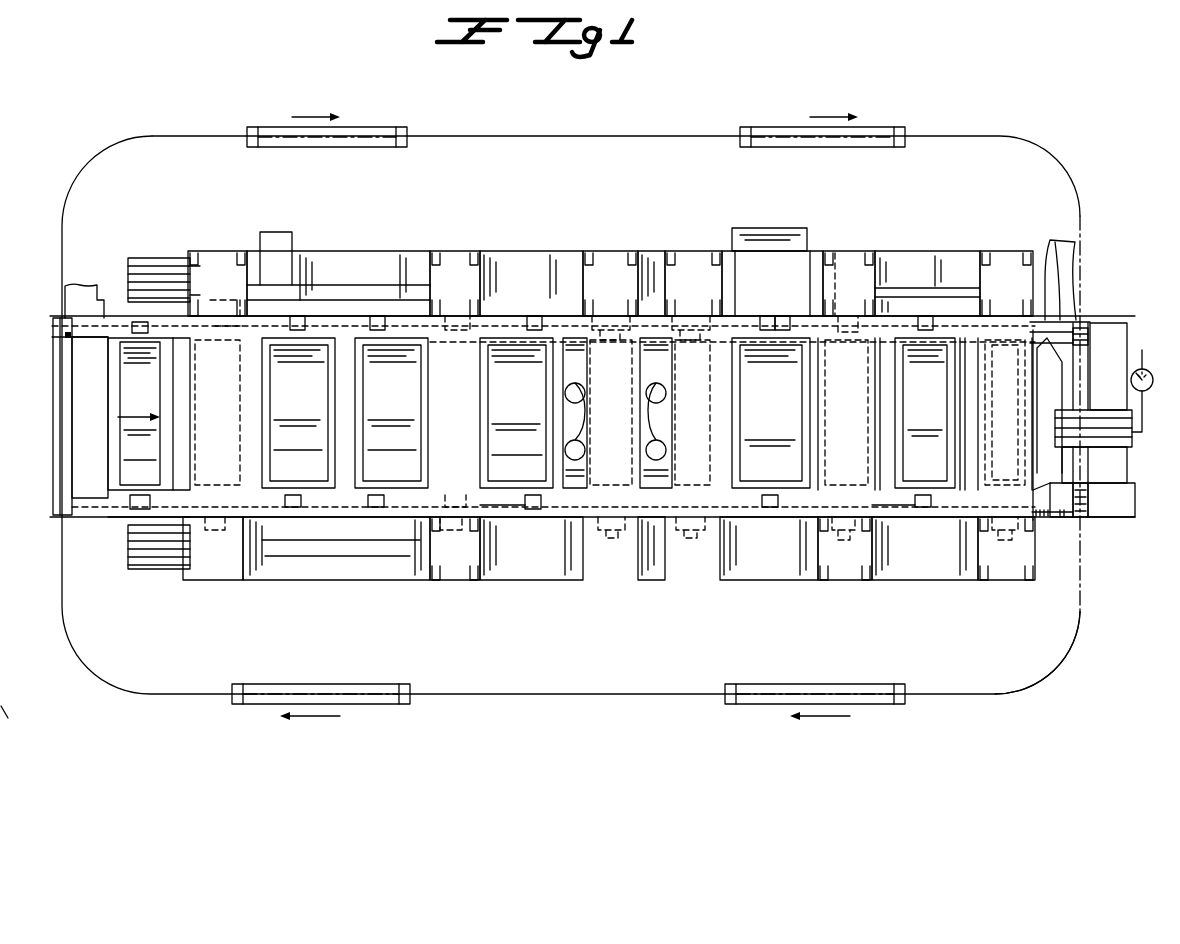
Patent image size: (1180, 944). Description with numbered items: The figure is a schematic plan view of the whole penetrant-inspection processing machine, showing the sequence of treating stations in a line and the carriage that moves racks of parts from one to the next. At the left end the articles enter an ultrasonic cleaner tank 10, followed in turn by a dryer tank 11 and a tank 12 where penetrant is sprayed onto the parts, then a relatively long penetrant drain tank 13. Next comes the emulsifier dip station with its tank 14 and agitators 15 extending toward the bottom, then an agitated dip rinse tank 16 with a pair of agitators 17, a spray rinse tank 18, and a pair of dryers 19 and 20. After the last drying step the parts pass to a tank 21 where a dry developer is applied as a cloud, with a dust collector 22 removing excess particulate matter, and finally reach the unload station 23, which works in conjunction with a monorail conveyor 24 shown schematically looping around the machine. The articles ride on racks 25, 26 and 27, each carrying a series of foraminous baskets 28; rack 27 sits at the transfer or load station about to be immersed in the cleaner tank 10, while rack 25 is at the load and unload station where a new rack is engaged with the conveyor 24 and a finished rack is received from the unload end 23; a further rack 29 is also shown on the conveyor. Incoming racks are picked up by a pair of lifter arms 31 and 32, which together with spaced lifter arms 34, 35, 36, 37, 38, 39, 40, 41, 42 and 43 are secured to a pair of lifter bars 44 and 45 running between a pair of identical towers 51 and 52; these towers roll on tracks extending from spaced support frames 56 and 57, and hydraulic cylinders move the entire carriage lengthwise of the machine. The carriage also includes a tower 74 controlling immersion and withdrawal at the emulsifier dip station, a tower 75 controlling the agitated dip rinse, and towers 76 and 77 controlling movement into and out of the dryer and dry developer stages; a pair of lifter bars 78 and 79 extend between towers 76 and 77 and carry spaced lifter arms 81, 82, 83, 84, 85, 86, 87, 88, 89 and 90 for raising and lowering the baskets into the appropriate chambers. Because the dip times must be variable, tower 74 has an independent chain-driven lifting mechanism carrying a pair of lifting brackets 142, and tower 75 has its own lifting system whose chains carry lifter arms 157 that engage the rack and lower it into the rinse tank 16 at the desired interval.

The ultrasonic cleaner tank 10 is at (102, 480).
The dryer tank 11 is at (210, 461).
The penetrant tank 12 is at (325, 492).
The penetrant drain tank 13 is at (512, 498).
The emulsifier dip tank 14 is at (578, 494).
The agitators 15 is at (572, 388).
The agitated dip rinse tank 16 is at (648, 495).
The agitators 17 is at (660, 425).
The spray rinse tank 18 is at (778, 432).
The dryer 19 is at (856, 411).
The dryer 20 is at (936, 411).
The dry developer tank 21 is at (1015, 432).
The dust collector 22 is at (1066, 262).
The unload station 23 is at (1125, 320).
The monorail conveyor 24 is at (1078, 622).
The rack 25 is at (880, 703).
The rack 26 is at (380, 703).
The rack 27 is at (52, 406).
The foraminous baskets 28 is at (380, 132).
The conveyor link 29 is at (762, 132).
The lifter arm 31 is at (138, 335).
The lifter arm 32 is at (138, 505).
The lifter arm 34 is at (226, 316).
The lifter arm 35 is at (296, 318).
The lifter arm 36 is at (378, 318).
The lifter arm 37 is at (458, 320).
The lifter arm 38 is at (534, 318).
The lifter arm 39 is at (212, 517).
The lifter arm 40 is at (295, 508).
The lifter arm 41 is at (376, 508).
The lifter arm 42 is at (448, 518).
The lifter arm 43 is at (533, 510).
The lifter bar 44 is at (135, 322).
The lifter bar 45 is at (172, 515).
The tower 51 is at (222, 250).
The tower 52 is at (458, 251).
The support frame 56 is at (160, 258).
The support frame 57 is at (138, 572).
The tower 74 is at (610, 251).
The tower 75 is at (688, 251).
The tower 76 is at (852, 252).
The tower 77 is at (1002, 252).
The lifter bar 78 is at (782, 318).
The lifter bar 79 is at (782, 512).
The lifter arm 81 is at (775, 332).
The lifter arm 82 is at (848, 322).
The lifter arm 83 is at (925, 318).
The lifter arm 84 is at (1005, 414).
The lifter arm 85 is at (1094, 332).
The lifter arm 86 is at (770, 508).
The lifter arm 87 is at (842, 518).
The lifter arm 88 is at (922, 508).
The lifter arm 89 is at (1004, 518).
The lifter arm 90 is at (1085, 520).
The lifting brackets 142 is at (612, 330).
The lifter arms 157 is at (688, 325).